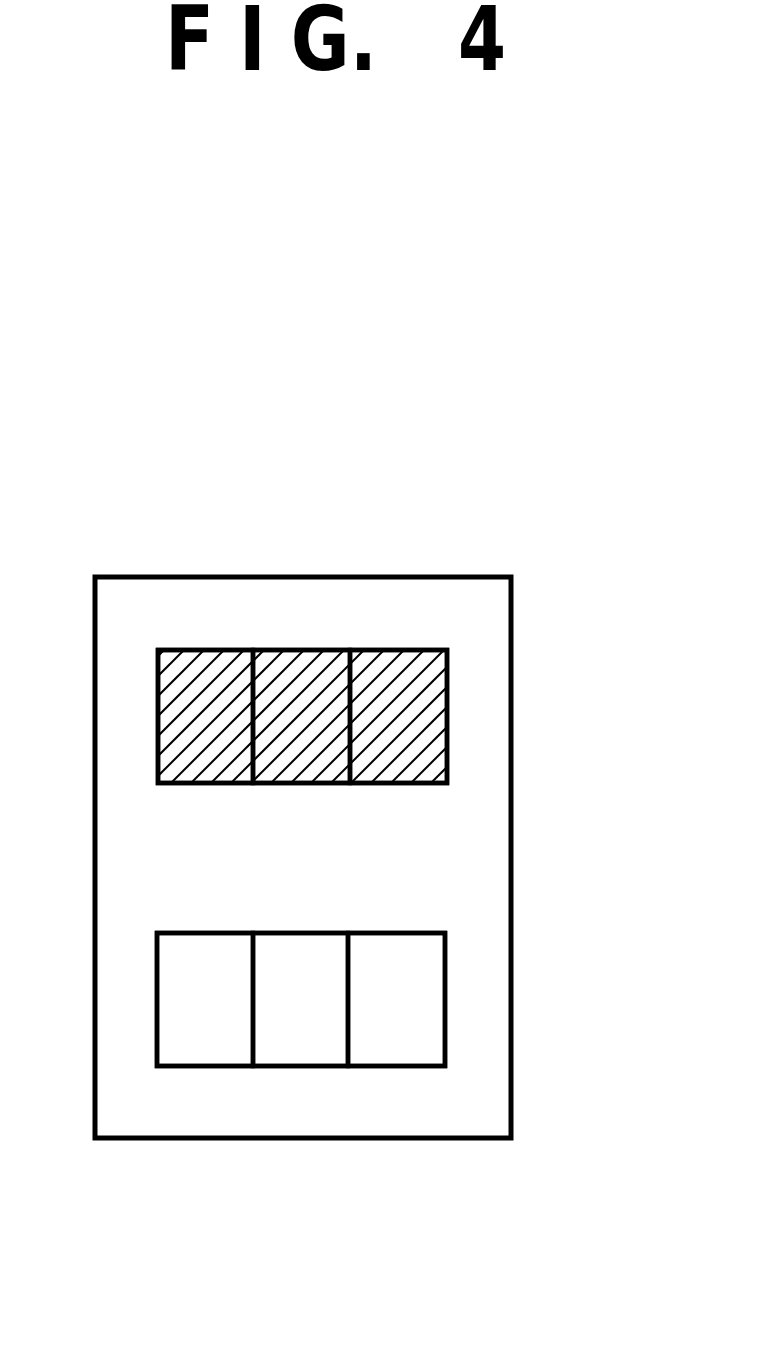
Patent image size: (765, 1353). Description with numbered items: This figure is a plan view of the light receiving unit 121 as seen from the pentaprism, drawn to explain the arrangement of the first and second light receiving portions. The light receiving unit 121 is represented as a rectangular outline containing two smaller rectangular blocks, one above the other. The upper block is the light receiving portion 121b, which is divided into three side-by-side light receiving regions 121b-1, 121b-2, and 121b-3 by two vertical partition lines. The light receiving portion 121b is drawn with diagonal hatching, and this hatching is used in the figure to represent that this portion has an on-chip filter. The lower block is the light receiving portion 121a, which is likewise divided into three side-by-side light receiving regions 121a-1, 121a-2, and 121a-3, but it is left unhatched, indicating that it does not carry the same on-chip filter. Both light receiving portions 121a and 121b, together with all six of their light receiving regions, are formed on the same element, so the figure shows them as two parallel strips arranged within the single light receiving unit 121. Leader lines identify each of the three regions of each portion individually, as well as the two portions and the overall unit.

The light receiving unit 121 is at (483, 613).
The light receiving portion 121a is at (397, 981).
The light receiving region 121a-1 is at (210, 1027).
The light receiving region 121a-2 is at (302, 1030).
The light receiving region 121a-3 is at (398, 1033).
The light receiving portion 121b is at (393, 717).
The light receiving region 121b-1 is at (210, 703).
The light receiving region 121b-2 is at (300, 697).
The light receiving region 121b-3 is at (395, 692).